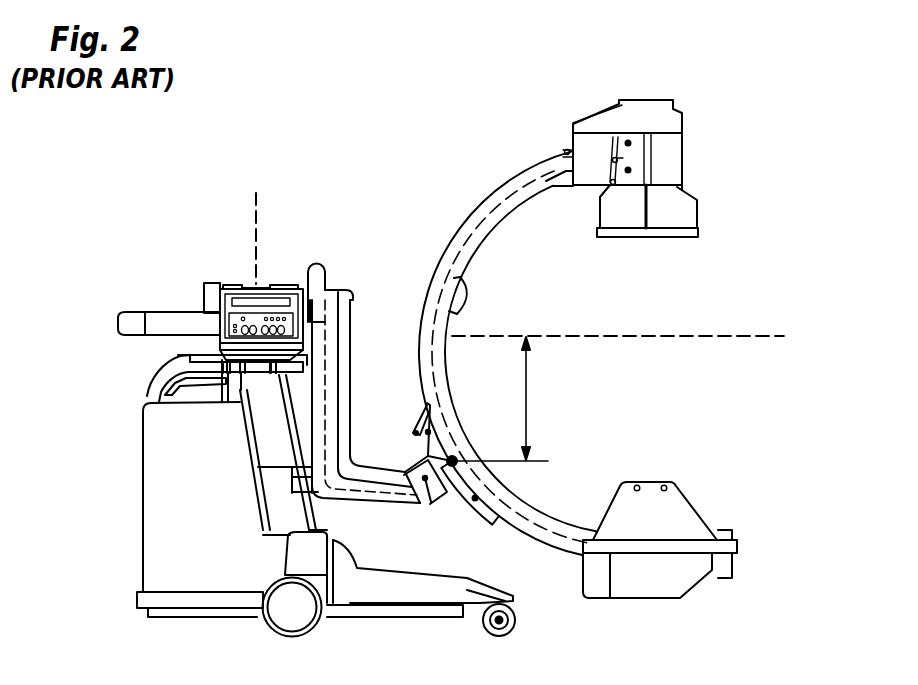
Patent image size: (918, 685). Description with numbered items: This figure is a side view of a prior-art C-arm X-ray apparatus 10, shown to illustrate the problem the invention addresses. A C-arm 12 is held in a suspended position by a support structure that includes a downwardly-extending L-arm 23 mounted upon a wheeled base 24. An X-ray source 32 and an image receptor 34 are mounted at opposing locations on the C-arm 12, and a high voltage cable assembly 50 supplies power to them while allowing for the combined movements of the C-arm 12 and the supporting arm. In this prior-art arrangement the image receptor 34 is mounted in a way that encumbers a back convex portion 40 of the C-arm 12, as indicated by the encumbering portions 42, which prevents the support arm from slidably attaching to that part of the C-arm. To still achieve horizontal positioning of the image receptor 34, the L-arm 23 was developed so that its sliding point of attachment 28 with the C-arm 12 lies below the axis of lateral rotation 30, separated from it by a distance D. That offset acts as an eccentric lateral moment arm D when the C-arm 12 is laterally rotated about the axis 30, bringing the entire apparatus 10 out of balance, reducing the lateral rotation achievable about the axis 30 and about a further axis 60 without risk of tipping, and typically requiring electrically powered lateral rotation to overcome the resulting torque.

The C-arm X-ray apparatus 10 is at (238, 144).
The C-arm 12 is at (432, 270).
The L-arm 23 is at (346, 308).
The wheeled base 24 is at (146, 404).
The point of attachment 28 is at (452, 468).
The axis of lateral rotation 30 is at (756, 336).
The X-ray source 32 is at (677, 512).
The image receptor 34 is at (676, 205).
The back convex portion 40 is at (563, 150).
The encumbering portions 42 is at (575, 142).
The high voltage cable assembly 50 is at (316, 262).
The axis 60 is at (255, 222).
The distance / eccentric lateral moment arm D is at (527, 402).